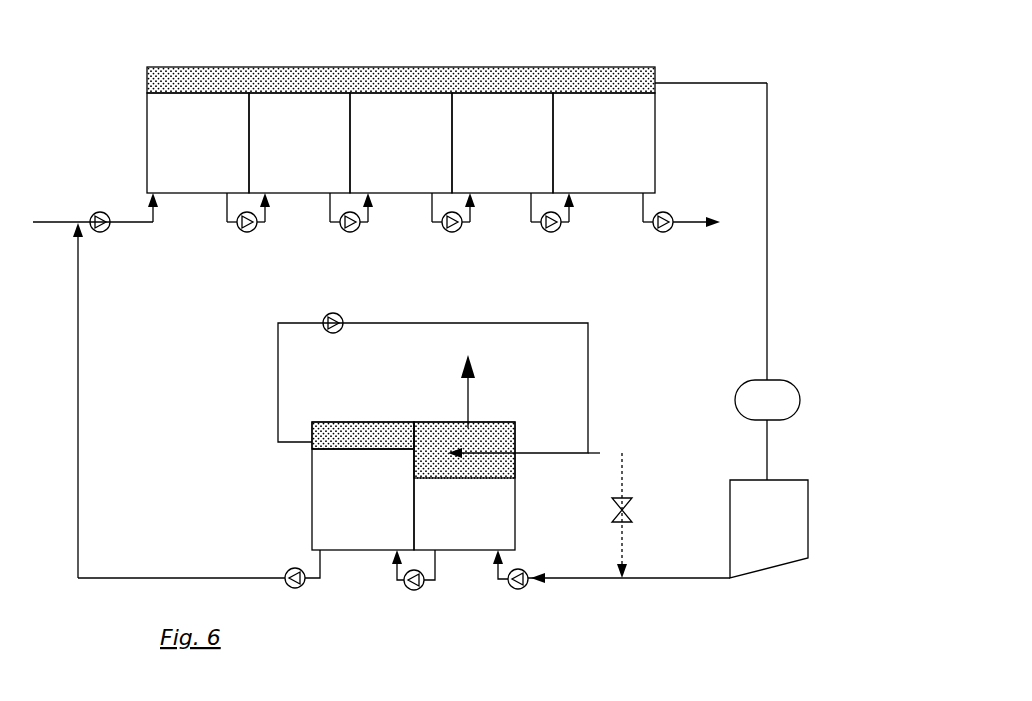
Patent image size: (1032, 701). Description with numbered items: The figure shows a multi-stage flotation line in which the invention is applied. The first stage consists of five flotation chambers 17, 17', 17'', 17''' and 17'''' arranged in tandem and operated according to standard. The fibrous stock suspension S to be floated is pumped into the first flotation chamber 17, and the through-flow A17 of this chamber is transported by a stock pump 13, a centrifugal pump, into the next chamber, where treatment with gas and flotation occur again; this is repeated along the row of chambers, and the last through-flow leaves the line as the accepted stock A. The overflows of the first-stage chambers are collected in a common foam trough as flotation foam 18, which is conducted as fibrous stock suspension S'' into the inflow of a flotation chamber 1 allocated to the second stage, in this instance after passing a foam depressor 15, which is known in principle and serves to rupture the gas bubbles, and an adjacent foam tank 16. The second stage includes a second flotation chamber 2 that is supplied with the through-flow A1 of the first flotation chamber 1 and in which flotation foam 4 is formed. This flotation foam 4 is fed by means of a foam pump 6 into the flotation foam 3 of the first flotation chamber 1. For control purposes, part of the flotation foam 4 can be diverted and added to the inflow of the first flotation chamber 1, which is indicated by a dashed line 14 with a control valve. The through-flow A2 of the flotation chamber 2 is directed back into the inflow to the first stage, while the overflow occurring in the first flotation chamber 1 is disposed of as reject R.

The flotation foam 18 is at (597, 80).
The first flotation chamber 17 is at (198, 143).
The flotation chamber 17' is at (299, 143).
The flotation chamber 17'' is at (401, 143).
The flotation chamber 17''' is at (502, 143).
The flotation chamber 17'''' is at (604, 143).
The fibrous stock suspension S is at (95, 349).
The accepted stock A is at (687, 220).
The through-flow A17 is at (228, 224).
The stock pump 13 is at (254, 231).
The foam pump 6 is at (342, 327).
The reject R is at (468, 355).
The foam depressor 15 is at (748, 402).
The dashed line with control valve 14 is at (603, 451).
The foam tank 16 is at (745, 517).
The flotation foam 4 is at (337, 437).
The flotation foam 3 is at (513, 467).
The second flotation chamber 2 is at (363, 486).
The first flotation chamber 1 is at (464, 486).
The through-flow A2 is at (217, 577).
The through-flow A1 is at (400, 590).
The fibrous stock suspension S'' is at (611, 593).